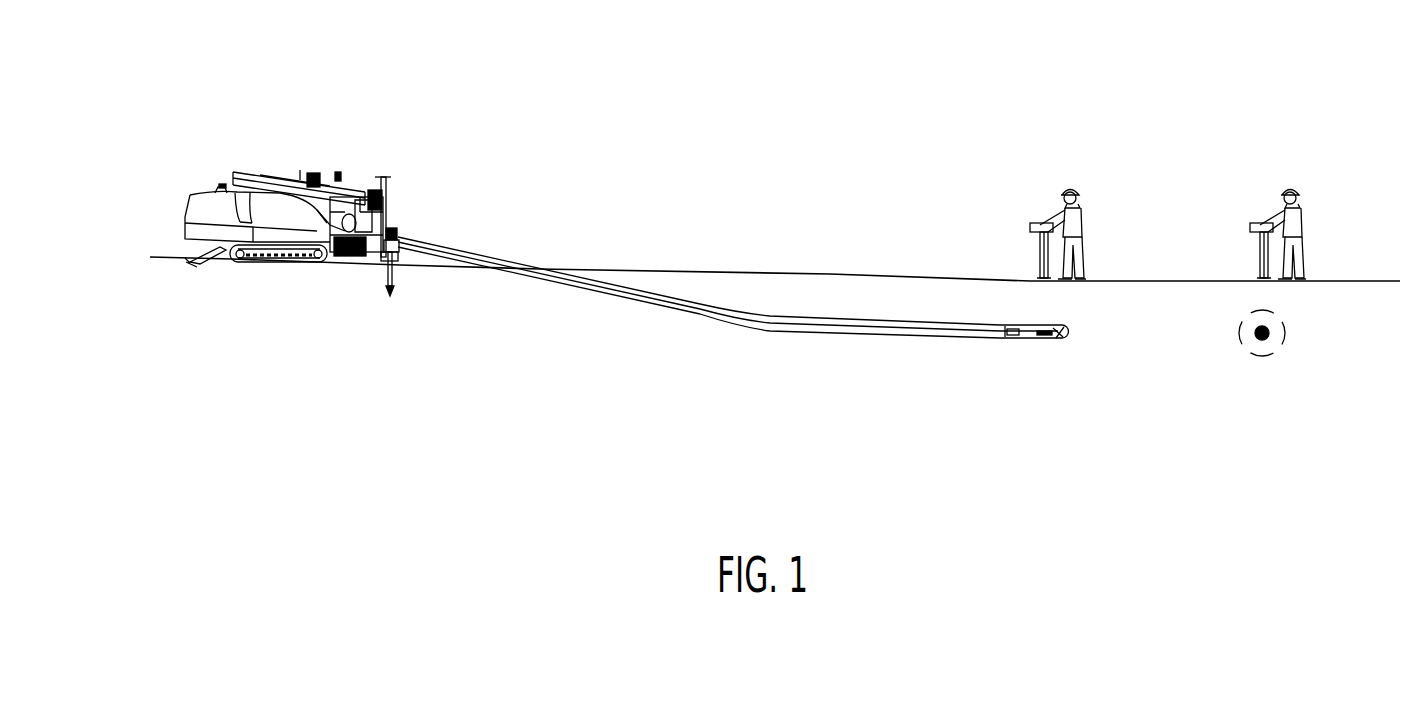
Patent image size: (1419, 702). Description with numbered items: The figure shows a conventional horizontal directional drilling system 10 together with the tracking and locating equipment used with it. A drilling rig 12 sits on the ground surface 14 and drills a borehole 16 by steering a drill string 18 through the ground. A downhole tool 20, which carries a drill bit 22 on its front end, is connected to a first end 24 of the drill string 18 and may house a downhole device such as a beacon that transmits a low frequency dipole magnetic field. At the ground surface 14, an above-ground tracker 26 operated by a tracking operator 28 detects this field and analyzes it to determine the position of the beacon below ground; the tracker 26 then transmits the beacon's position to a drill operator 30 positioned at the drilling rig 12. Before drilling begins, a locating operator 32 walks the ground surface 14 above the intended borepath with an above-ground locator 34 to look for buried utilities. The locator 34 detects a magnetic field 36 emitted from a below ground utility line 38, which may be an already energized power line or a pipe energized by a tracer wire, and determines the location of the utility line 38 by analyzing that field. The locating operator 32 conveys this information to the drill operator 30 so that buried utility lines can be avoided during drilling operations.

The horizontal directional drilling system 10 is at (376, 82).
The drilling rig 12 is at (197, 193).
The ground surface 14 is at (645, 268).
The borehole 16 is at (565, 272).
The drill string 18 is at (628, 303).
The downhole tool 20 is at (1040, 340).
The drill bit 22 is at (1060, 340).
The first end 24 is at (1001, 338).
The above-ground tracker 26 is at (1030, 222).
The tracking operator 28 is at (1070, 186).
The drill operator 30 is at (348, 186).
The locating operator 32 is at (1293, 186).
The above-ground locator 34 is at (1252, 222).
The magnetic field 36 is at (1277, 351).
The below ground utility line 38 is at (1268, 328).